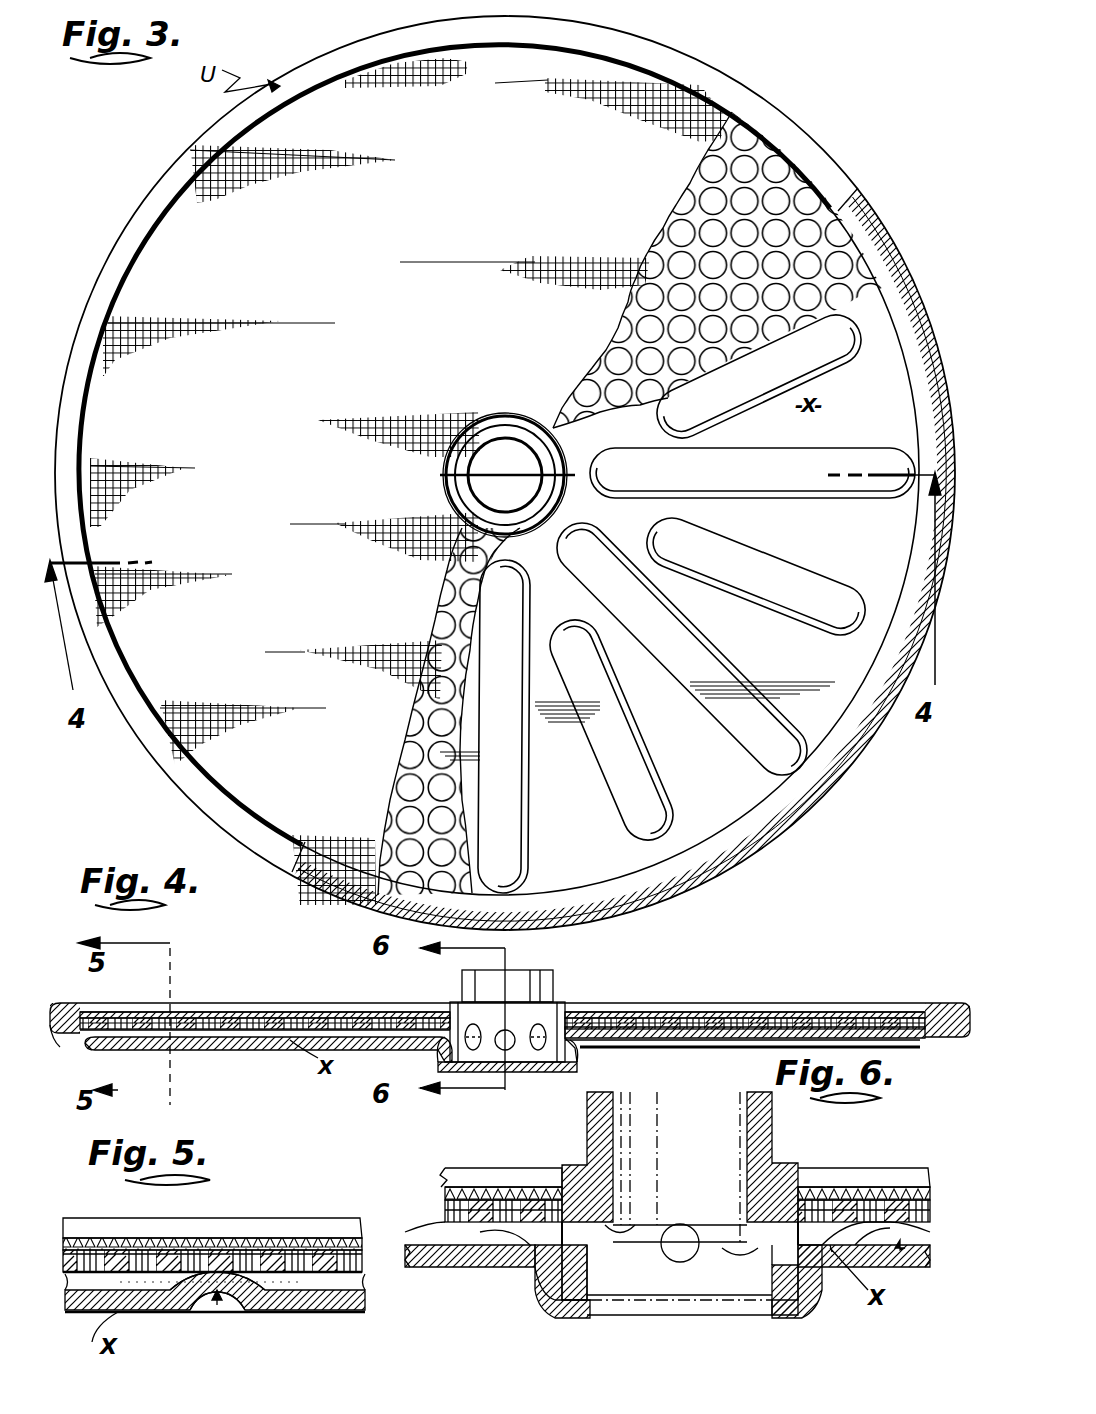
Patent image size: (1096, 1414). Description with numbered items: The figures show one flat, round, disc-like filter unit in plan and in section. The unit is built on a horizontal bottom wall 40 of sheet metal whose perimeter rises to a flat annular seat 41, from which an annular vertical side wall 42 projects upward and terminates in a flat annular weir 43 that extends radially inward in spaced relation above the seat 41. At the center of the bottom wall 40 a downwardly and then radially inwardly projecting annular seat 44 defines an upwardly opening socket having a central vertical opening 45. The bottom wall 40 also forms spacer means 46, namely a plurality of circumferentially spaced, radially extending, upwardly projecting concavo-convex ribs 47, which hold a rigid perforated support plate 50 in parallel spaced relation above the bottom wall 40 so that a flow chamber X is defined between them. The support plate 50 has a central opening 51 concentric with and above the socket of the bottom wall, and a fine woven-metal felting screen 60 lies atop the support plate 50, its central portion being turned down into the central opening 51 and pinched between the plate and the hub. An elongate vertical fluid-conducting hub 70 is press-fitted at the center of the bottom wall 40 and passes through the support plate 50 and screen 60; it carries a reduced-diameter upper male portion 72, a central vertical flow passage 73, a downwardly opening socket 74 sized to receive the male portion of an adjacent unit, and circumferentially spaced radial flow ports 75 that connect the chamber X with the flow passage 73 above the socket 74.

In FIG. 3, the bottom wall 40 is at (800, 785).
In FIG. 4, the bottom wall 40 is at (230, 1050).
In FIG. 5, the bottom wall 40 is at (345, 1312).
In FIG. 6, the bottom wall 40 is at (667, 1244).
In FIG. 3, the annular seat 41 is at (215, 822).
In FIG. 4, the annular seat 41 is at (95, 1050).
In FIG. 3, the side wall 42 is at (760, 830).
In FIG. 4, the side wall 42 is at (58, 1047).
In FIG. 3, the weir 43 is at (205, 790).
In FIG. 4, the weir 43 is at (80, 1012).
In FIG. 5, the weir 43 is at (92, 1218).
In FIG. 6, the weir 43 is at (842, 1167).
In FIG. 4, the annular seat 44 is at (600, 1060).
In FIG. 6, the annular seat 44 is at (540, 1284).
In FIG. 6, the central vertical opening 45 is at (592, 1318).
In FIG. 3, the spacer means 46 is at (852, 582).
In FIG. 5, the spacer means 46 is at (217, 1308).
In FIG. 6, the spacer means 46 is at (900, 1252).
In FIG. 3, the ribs 47 is at (760, 440).
In FIG. 4, the ribs 47 is at (240, 1030).
In FIG. 5, the ribs 47 is at (265, 1290).
In FIG. 6, the ribs 47 is at (452, 1235).
In FIG. 3, the support plate 50 is at (602, 368).
In FIG. 4, the support plate 50 is at (200, 1012).
In FIG. 5, the support plate 50 is at (272, 1238).
In FIG. 6, the support plate 50 is at (880, 1198).
In FIG. 3, the central opening 51 is at (510, 440).
In FIG. 6, the central opening 51 is at (570, 1215).
In FIG. 3, the felting screen 60 is at (270, 152).
In FIG. 4, the felting screen 60 is at (335, 1018).
In FIG. 5, the felting screen 60 is at (220, 1250).
In FIG. 6, the felting screen 60 is at (468, 1198).
In FIG. 3, the hub 70 is at (474, 420).
In FIG. 4, the hub 70 is at (462, 985).
In FIG. 6, the hub 70 is at (587, 1112).
In FIG. 3, the upper male portion 72 is at (476, 470).
In FIG. 4, the upper male portion 72 is at (525, 975).
In FIG. 6, the upper male portion 72 is at (775, 1135).
In FIG. 3, the flow passage 73 is at (490, 490).
In FIG. 4, the flow passage 73 is at (672, 1062).
In FIG. 6, the socket 74 is at (624, 1316).
In FIG. 4, the flow ports 75 is at (538, 1025).
In FIG. 6, the flow ports 75 is at (678, 1224).